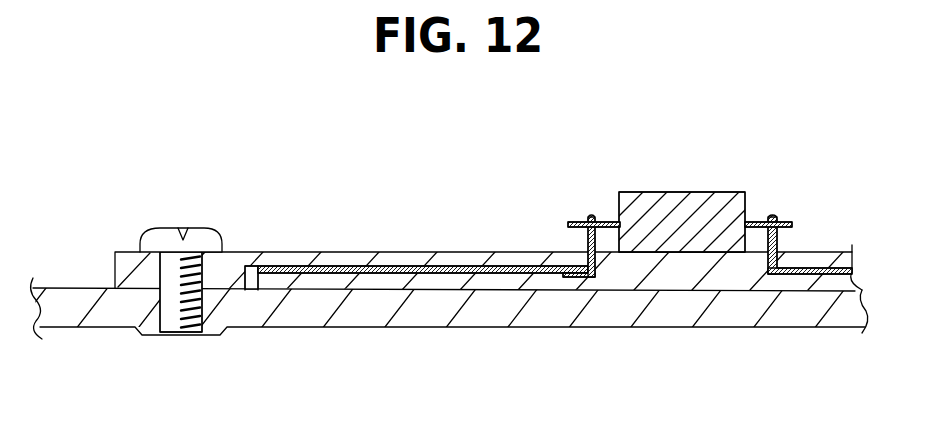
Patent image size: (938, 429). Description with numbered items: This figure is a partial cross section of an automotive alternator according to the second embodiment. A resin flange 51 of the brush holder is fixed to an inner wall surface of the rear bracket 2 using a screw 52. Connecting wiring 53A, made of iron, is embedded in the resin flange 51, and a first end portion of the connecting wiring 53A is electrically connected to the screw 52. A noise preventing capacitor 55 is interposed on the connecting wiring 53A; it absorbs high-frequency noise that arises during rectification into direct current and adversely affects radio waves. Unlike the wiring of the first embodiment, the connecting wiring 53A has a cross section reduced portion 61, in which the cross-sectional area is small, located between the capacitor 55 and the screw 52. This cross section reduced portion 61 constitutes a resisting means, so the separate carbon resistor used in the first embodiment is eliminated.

The rear bracket 2 is at (292, 308).
The flange 51 is at (118, 262).
The screw 52 is at (183, 227).
The connecting wiring 53A is at (407, 275).
The noise preventing capacitor 55 is at (683, 202).
The cross section reduced portion 61 is at (365, 268).